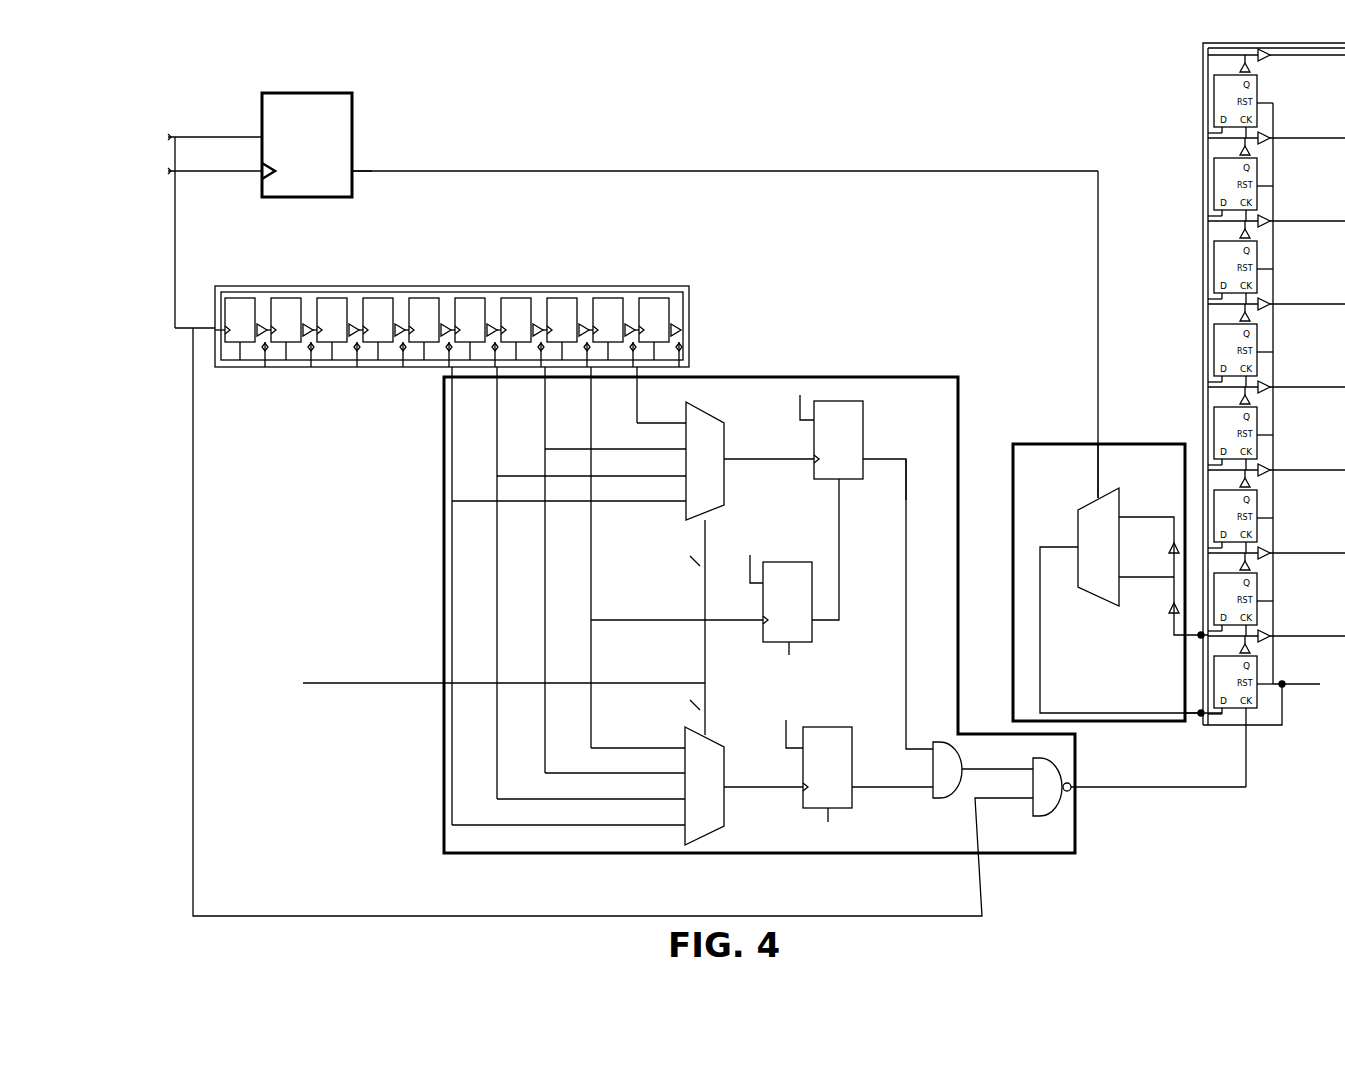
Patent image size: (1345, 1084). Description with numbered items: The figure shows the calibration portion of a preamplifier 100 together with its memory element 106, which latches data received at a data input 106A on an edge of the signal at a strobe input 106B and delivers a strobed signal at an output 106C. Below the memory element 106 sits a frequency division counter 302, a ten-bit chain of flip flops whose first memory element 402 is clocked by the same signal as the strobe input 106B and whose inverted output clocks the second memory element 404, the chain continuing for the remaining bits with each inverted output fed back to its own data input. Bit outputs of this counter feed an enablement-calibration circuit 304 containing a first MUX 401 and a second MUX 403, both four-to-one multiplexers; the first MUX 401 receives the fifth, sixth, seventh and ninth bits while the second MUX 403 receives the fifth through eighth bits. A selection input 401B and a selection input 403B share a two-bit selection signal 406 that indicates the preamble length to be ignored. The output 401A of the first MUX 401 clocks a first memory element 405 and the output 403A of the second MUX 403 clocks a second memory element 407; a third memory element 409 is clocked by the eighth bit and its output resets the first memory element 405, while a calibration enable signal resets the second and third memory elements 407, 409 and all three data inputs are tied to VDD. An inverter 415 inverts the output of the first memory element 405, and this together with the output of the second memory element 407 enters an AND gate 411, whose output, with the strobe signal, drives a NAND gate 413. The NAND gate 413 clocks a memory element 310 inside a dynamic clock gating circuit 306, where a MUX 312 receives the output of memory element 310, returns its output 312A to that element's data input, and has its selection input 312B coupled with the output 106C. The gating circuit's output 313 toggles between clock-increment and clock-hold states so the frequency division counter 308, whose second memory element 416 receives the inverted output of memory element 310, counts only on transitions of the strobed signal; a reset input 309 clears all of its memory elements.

The preamplifier 100 is at (142, 555).
The memory element 106 is at (307, 145).
The data input 106A is at (236, 137).
The strobe input 106B is at (242, 171).
The output 106C is at (341, 183).
The frequency division counter 302 is at (672, 285).
The enablement-calibration circuit 304 is at (778, 377).
The dynamic clock gating circuit 306 is at (1046, 437).
The frequency division counter 308 is at (1200, 48).
The reset input 309 is at (1284, 688).
The memory element 310 is at (1276, 708).
The MUX 312 is at (1143, 563).
The output of the MUX 312A is at (1078, 549).
The selection input of the MUX 312B is at (1088, 506).
The output of the dynamic clock gating circuit 313 is at (1186, 726).
The first MUX 401 is at (705, 461).
The output of the first MUX 401A is at (726, 458).
The selection input 401B is at (706, 509).
The first memory element 402 is at (230, 343).
The second MUX 403 is at (704, 786).
The output of the second MUX 403A is at (726, 785).
The selection input 403B is at (704, 735).
The second memory element 404 is at (283, 298).
The first memory element 405 is at (863, 567).
The two-bit selection signal 406 is at (479, 685).
The second memory element 407 is at (854, 772).
The third memory element 409 is at (773, 606).
The AND gate 411 is at (983, 770).
The NAND gate 413 is at (1139, 787).
The inverter 415 is at (905, 491).
The second memory element 416 is at (1276, 591).